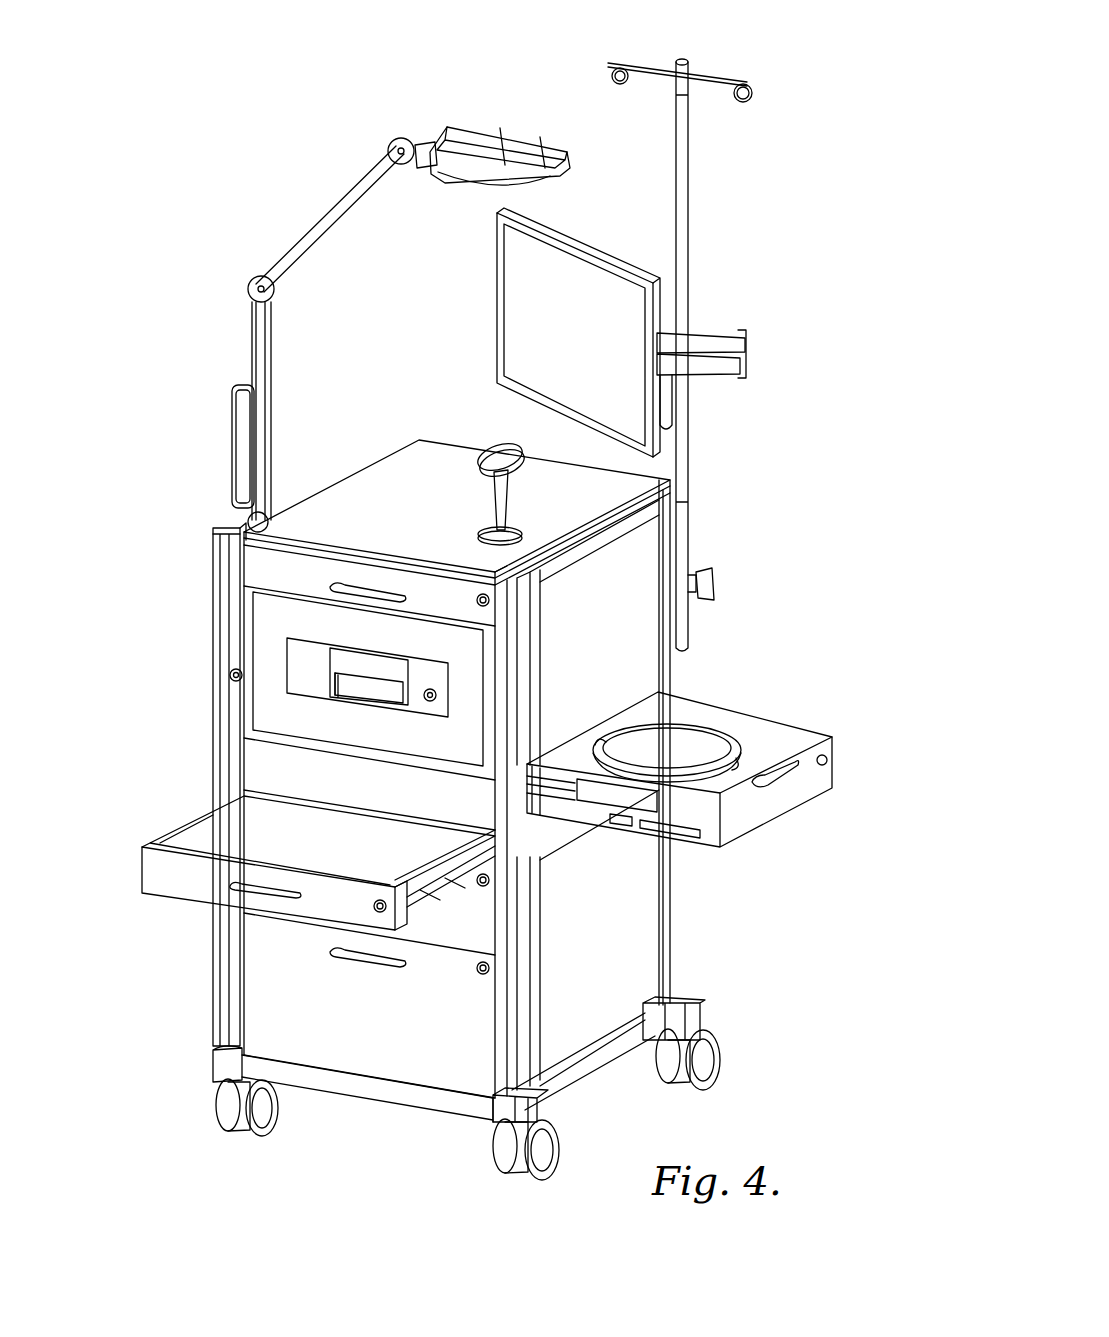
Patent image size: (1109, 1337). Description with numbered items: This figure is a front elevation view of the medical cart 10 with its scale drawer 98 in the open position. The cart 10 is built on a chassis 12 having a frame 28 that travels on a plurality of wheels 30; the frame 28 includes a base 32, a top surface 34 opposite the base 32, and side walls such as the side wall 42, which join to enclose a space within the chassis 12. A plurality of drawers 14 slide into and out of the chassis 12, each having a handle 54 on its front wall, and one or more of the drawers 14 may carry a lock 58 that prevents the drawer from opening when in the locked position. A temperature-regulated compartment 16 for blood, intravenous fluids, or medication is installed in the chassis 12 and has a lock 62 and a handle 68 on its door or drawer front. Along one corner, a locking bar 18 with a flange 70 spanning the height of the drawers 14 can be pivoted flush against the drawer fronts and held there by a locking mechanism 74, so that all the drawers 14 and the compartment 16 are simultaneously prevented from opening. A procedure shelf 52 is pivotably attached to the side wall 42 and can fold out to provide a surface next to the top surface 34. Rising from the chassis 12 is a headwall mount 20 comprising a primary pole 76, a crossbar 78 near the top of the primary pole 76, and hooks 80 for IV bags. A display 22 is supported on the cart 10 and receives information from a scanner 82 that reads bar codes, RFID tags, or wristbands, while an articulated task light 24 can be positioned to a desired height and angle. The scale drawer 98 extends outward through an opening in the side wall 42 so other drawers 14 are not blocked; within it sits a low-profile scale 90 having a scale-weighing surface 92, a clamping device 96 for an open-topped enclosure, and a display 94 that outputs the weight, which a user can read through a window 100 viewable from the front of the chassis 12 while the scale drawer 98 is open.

The medical cart 10 is at (275, 183).
The chassis 12 is at (650, 918).
The drawers 14 is at (440, 585).
The temperature-regulated compartment 16 is at (270, 625).
The locking bar 18 is at (235, 725).
The headwall mount 20 is at (690, 300).
The display 22 is at (520, 303).
The task light 24 is at (480, 135).
The frame 28 is at (460, 1100).
The wheels 30 is at (265, 1110).
The base 32 is at (570, 1072).
The top surface 34 is at (415, 450).
The side wall 42 is at (645, 980).
The procedure shelf 52 is at (645, 552).
The handle 54 is at (348, 590).
The lock 58 is at (489, 600).
The lock 62 is at (432, 700).
The handle 68 is at (365, 672).
The flange 70 is at (225, 980).
The locking mechanism 74 is at (232, 675).
The primary pole 76 is at (676, 142).
The crossbar 78 is at (700, 70).
The hooks 80 is at (757, 82).
The scanner 82 is at (490, 445).
The scale 90 is at (718, 730).
The scale-weighing surface 92 is at (752, 740).
The display 94 is at (626, 820).
The clamping device 96 is at (603, 742).
The scale drawer 98 is at (760, 820).
The window 100 is at (585, 790).